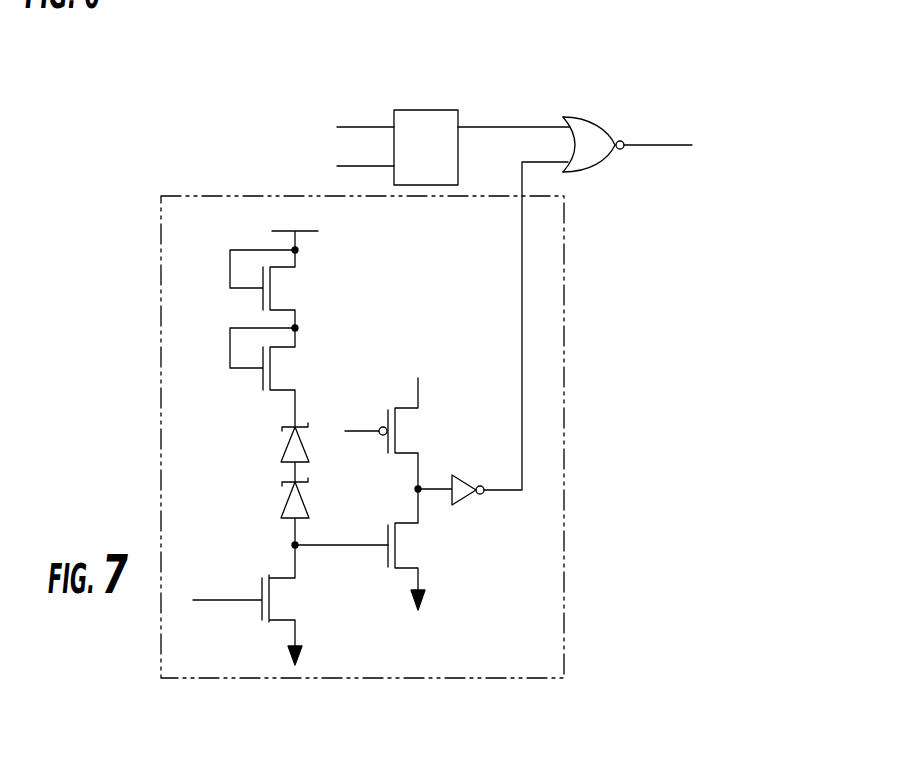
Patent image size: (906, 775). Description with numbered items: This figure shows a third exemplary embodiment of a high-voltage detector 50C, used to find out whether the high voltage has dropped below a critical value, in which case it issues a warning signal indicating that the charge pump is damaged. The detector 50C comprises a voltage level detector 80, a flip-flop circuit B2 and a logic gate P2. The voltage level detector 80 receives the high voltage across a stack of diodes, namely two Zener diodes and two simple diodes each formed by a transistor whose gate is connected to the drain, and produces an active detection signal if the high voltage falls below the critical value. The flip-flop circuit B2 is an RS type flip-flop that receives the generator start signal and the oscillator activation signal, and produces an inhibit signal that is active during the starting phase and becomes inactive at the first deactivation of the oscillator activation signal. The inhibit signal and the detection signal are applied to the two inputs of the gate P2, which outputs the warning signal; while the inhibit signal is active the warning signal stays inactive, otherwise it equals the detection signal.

The detector 50C is at (718, 58).
The voltage level detector 80 is at (564, 341).
The flip-flop circuit B2 is at (433, 110).
The logic gate P2 is at (587, 117).